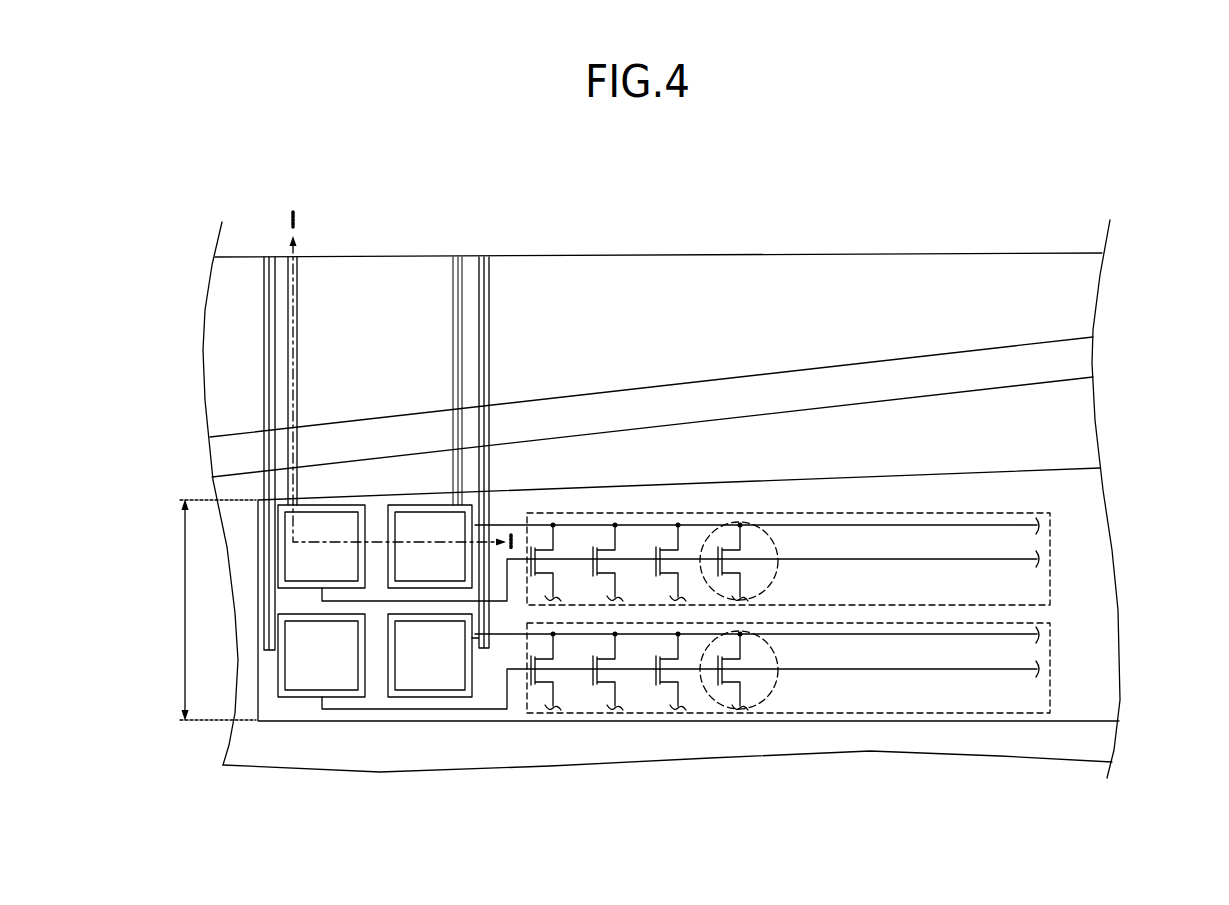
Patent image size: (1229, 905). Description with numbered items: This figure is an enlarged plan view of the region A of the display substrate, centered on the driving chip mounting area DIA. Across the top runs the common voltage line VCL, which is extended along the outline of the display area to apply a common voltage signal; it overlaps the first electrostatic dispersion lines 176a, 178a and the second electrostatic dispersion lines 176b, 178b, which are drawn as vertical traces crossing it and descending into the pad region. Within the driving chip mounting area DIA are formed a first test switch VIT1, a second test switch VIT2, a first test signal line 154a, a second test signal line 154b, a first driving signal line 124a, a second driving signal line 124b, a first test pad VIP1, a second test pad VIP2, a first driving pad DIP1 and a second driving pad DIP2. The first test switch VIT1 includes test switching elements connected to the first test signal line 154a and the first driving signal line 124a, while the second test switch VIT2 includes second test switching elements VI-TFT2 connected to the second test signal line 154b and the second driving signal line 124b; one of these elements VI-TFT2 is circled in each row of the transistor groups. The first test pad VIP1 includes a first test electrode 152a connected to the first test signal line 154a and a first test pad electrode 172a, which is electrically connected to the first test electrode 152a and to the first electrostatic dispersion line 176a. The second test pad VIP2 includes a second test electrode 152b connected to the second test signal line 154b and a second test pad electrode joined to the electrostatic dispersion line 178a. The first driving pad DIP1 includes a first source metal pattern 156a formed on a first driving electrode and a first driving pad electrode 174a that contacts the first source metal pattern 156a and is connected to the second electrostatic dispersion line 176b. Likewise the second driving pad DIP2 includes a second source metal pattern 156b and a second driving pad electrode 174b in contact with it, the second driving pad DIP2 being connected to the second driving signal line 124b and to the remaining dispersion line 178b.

The common voltage line VCL is at (960, 377).
The second line of the second electrostatic dispersion lines 178b is at (266, 277).
The first line of the second electrostatic dispersion lines 176b is at (299, 277).
The first line of the first electrostatic dispersion lines 176a is at (455, 277).
The second line of the first electrostatic dispersion lines 178a is at (487, 277).
The driving chip mounting area DIA is at (199, 610).
The first driving pad electrode 174a is at (282, 664).
The first source metal pattern 156a is at (253, 667).
The second driving pad electrode 174b is at (321, 718).
The second source metal pattern 156b is at (309, 722).
The first test pad electrode 172a is at (470, 664).
The first test electrode 152a is at (500, 667).
The second test electrode 152b is at (441, 718).
The first driving pad DIP1 is at (247, 823).
The second driving pad DIP2 is at (357, 823).
The second test pad VIP2 is at (493, 823).
The first test pad VIP1 is at (605, 823).
The first test switch VIT1 is at (1052, 558).
The second test switch VIT2 is at (1052, 665).
The first test signal line 154a is at (850, 525).
The first driving signal line 124a is at (925, 558).
The second test signal line 154b is at (850, 669).
The second driving signal line 124b is at (925, 634).
The second test switching element VI-TFT2 is at (736, 508).
The region A is at (1031, 770).